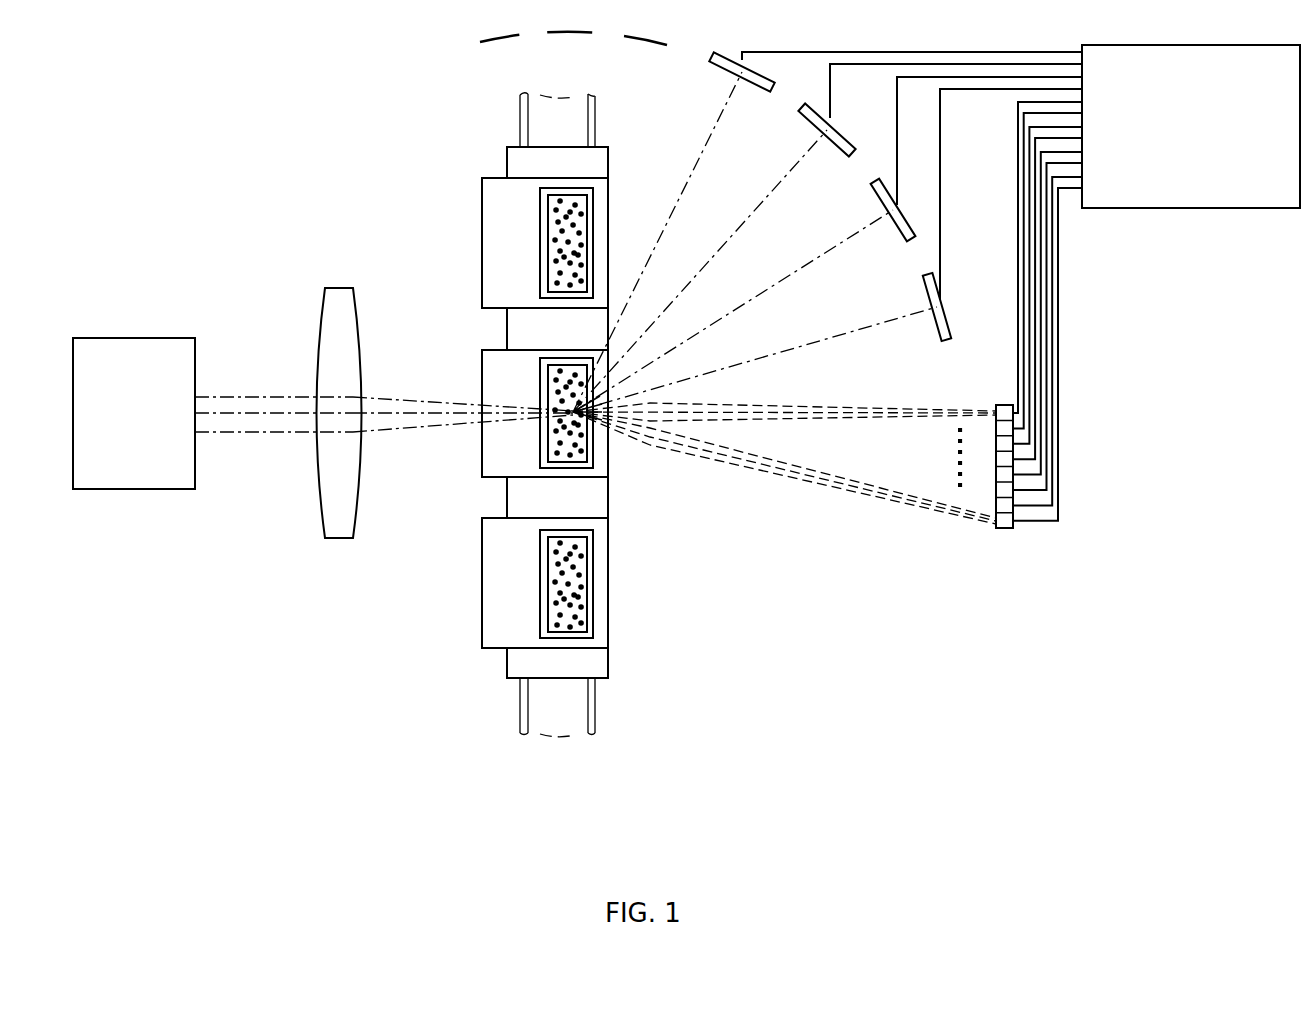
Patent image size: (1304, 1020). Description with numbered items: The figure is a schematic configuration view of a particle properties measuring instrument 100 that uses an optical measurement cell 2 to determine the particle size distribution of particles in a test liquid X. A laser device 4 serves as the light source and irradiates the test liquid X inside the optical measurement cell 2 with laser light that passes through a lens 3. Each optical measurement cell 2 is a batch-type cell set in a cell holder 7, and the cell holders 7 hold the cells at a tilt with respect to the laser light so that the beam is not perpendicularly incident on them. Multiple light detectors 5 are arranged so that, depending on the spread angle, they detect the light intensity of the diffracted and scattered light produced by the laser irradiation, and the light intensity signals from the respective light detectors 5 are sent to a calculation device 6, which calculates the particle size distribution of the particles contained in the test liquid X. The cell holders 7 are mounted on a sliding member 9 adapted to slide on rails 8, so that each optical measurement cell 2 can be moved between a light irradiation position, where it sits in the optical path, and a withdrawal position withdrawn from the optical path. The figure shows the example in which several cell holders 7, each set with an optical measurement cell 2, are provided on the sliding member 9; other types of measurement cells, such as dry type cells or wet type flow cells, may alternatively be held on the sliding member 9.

The particle properties measuring instrument 100 is at (258, 103).
The optical measurement cell 2 is at (540, 247).
The lens 3 is at (339, 288).
The laser device 4 is at (136, 338).
The light detectors 5 is at (725, 54).
The calculation device 6 is at (1190, 208).
The cell holder 7 is at (482, 196).
The rails 8 is at (597, 705).
The sliding member 9 is at (507, 498).
The test liquid X is at (578, 218).